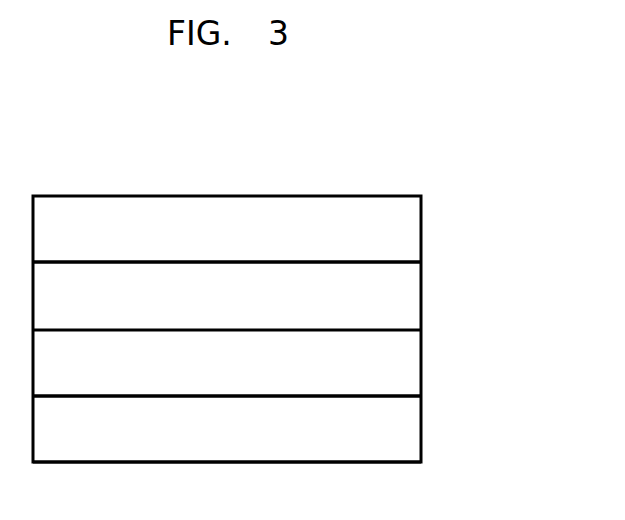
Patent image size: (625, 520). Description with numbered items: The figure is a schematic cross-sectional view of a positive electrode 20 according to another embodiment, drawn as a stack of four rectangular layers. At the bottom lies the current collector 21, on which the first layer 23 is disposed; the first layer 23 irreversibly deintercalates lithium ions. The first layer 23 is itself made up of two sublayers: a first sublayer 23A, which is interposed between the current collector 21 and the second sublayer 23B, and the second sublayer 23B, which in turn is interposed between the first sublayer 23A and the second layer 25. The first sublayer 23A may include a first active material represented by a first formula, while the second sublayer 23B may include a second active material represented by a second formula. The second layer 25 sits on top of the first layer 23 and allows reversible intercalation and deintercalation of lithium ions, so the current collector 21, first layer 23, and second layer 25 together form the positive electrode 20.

The positive electrode 20 is at (436, 188).
The second layer 25 is at (421, 230).
The first layer 23 is at (535, 290).
The second sublayer 23B is at (421, 297).
The first sublayer 23A is at (421, 363).
The current collector 21 is at (421, 430).